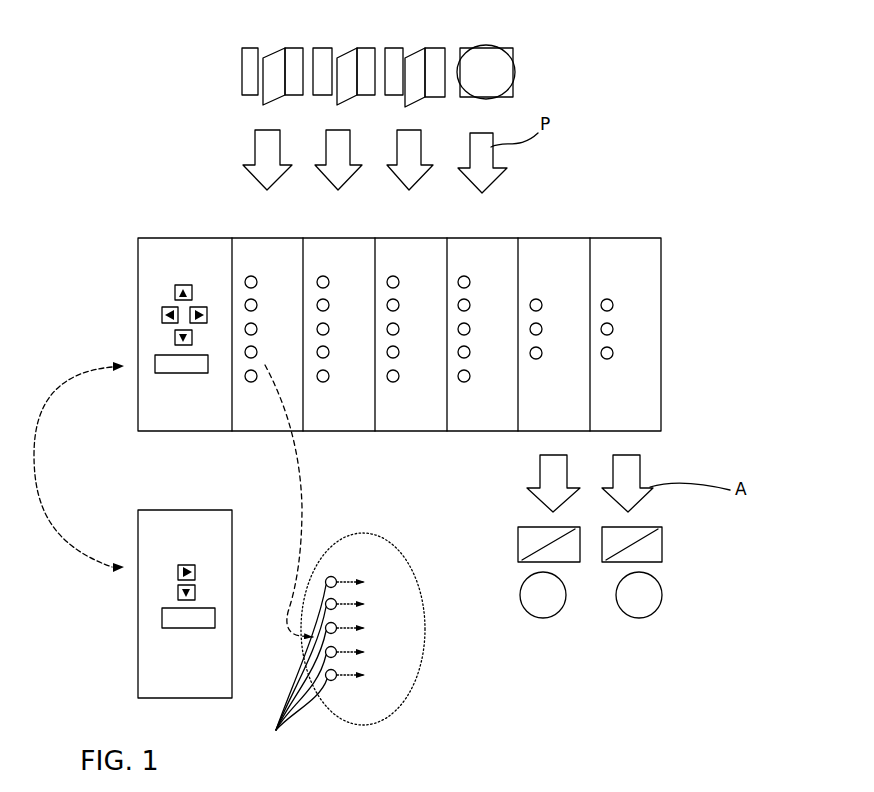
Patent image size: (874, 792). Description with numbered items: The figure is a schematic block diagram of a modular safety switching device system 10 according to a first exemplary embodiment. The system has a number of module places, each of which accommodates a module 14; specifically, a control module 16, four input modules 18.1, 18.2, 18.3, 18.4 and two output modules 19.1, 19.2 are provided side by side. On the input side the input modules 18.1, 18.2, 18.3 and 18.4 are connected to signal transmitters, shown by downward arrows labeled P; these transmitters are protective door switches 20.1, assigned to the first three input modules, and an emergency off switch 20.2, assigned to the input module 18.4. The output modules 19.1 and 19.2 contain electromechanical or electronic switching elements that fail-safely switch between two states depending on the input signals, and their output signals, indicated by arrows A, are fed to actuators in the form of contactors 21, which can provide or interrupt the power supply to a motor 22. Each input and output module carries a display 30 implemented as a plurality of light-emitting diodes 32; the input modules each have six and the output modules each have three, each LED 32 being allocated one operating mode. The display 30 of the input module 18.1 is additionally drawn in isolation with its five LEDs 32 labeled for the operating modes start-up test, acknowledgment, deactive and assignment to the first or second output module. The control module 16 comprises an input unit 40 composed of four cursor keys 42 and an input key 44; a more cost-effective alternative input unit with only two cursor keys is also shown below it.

The modular safety switching device system 10 is at (688, 155).
The module 14 is at (330, 235).
The control module 16 is at (190, 431).
The input module 18.1 is at (275, 431).
The input module 18.2 is at (340, 431).
The input module 18.3 is at (412, 431).
The input module 18.4 is at (478, 431).
The output module 19.1 is at (543, 431).
The output module 19.2 is at (661, 431).
The protective door switch 20.1 is at (413, 43).
The emergency off switch 20.2 is at (525, 42).
The contactor 21 is at (518, 545).
The motor 22 is at (545, 618).
The display 30 is at (621, 329).
The light-emitting diode 32 is at (619, 303).
The input unit 40 is at (168, 286).
The cursor key 42 is at (163, 316).
The input key 44 is at (165, 375).